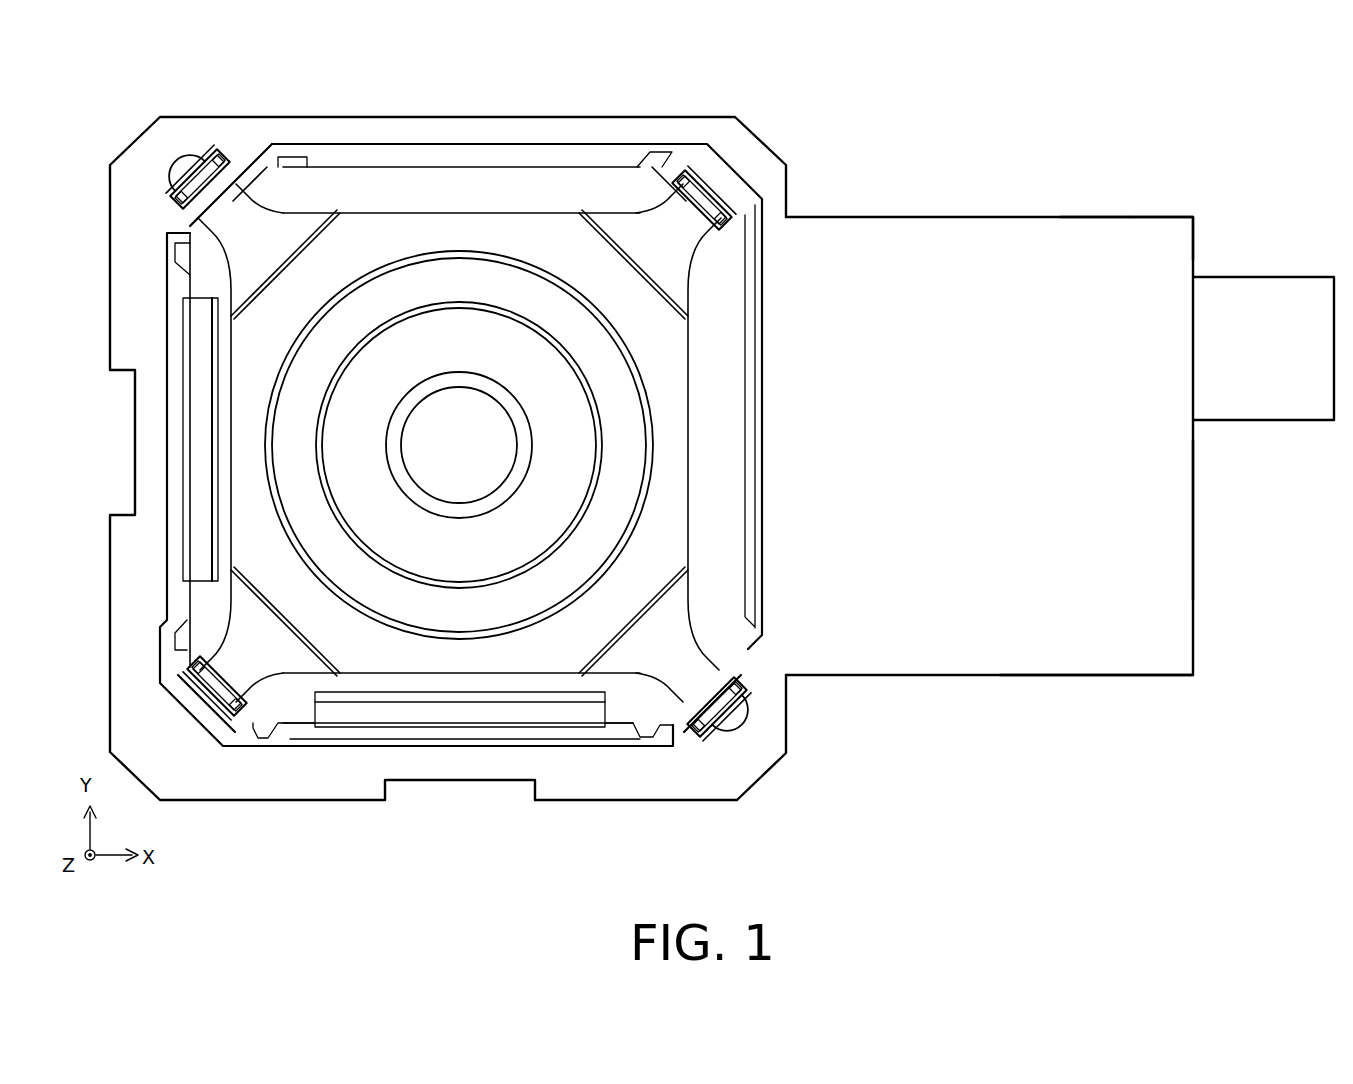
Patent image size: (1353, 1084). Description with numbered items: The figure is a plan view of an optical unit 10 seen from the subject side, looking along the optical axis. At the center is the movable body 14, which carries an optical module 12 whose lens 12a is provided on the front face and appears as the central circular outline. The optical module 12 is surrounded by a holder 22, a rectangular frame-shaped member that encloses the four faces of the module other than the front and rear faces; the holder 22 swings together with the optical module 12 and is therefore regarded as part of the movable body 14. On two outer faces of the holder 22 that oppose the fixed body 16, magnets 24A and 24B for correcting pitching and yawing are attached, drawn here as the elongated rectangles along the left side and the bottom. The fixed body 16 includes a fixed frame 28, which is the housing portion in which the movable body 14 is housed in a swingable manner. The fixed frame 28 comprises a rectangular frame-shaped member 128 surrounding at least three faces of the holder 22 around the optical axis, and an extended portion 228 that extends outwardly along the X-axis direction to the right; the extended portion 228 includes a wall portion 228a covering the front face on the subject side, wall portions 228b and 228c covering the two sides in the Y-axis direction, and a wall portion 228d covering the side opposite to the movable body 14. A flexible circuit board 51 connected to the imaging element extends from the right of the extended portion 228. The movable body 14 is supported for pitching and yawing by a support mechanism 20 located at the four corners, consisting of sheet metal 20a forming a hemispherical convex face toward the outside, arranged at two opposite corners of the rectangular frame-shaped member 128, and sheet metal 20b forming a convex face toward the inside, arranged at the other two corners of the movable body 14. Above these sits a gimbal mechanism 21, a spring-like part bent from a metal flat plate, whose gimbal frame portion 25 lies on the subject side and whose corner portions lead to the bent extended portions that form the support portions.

The optical unit 10 is at (1172, 100).
The optical module 12 is at (630, 322).
The lens 12a is at (457, 445).
The movable body 14 is at (432, 385).
The fixed body 16 is at (461, 465).
The support mechanism 20 is at (490, 468).
The sheet metal 20a is at (210, 152).
The sheet metal 20b is at (673, 180).
The gimbal mechanism 21 is at (531, 236).
The holder 22 is at (622, 700).
The magnet 24A is at (196, 413).
The magnet 24B is at (498, 716).
The gimbal frame portion 25 is at (348, 250).
The fixed frame 28 is at (130, 222).
The flexible circuit board 51 is at (1243, 298).
The rectangular frame-shaped member 128 is at (666, 787).
The extended portion 228 is at (912, 254).
The wall portion 228a is at (1042, 246).
The wall portion 228b is at (1125, 678).
The wall portion 228c is at (1123, 216).
The wall portion 228d is at (1195, 528).